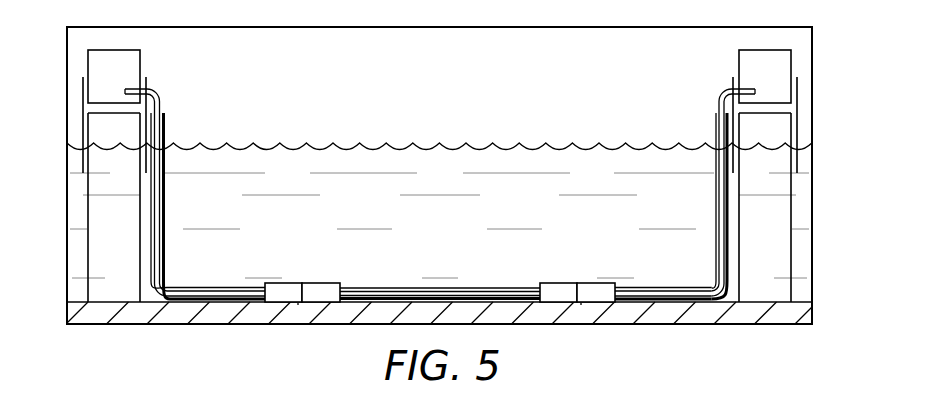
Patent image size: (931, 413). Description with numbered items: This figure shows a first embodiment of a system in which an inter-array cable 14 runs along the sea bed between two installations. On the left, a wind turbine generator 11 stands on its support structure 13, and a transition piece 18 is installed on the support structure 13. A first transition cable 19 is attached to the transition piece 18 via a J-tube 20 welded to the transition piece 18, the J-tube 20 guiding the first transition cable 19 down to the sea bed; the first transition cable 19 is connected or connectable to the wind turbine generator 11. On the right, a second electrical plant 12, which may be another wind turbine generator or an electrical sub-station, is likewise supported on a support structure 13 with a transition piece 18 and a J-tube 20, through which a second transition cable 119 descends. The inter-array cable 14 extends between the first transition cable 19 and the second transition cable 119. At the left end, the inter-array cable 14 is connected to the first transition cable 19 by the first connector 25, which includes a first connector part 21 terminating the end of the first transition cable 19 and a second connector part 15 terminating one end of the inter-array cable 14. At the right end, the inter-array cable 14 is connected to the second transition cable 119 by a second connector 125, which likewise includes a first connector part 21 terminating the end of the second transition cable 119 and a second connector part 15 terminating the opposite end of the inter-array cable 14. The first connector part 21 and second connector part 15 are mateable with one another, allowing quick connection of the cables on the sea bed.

The wind turbine generator 11 is at (140, 60).
The second electrical plant 12 is at (739, 60).
The support structure 13 is at (88, 208).
The inter-array cable 14 is at (440, 290).
The second connector part 15 is at (318, 283).
The transition piece 18 is at (83, 117).
The first transition cable 19 is at (222, 288).
The second transition cable 119 is at (655, 288).
The J-tube 20 is at (163, 127).
The first connector part 21 is at (282, 283).
The first connector 25 is at (296, 312).
The second connector 125 is at (582, 312).